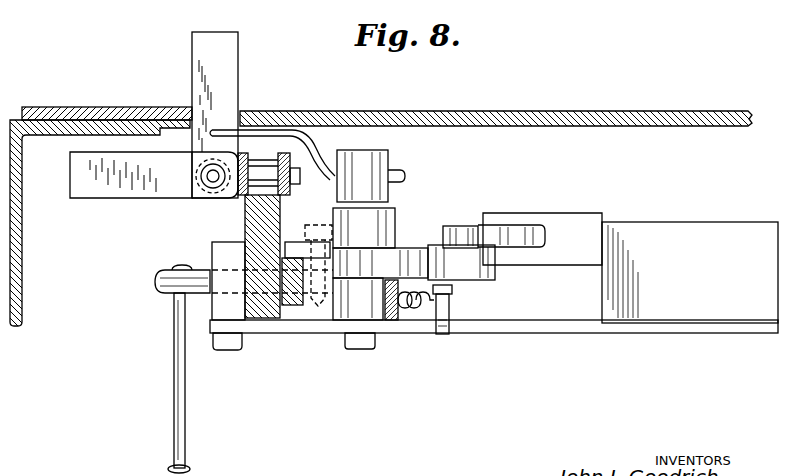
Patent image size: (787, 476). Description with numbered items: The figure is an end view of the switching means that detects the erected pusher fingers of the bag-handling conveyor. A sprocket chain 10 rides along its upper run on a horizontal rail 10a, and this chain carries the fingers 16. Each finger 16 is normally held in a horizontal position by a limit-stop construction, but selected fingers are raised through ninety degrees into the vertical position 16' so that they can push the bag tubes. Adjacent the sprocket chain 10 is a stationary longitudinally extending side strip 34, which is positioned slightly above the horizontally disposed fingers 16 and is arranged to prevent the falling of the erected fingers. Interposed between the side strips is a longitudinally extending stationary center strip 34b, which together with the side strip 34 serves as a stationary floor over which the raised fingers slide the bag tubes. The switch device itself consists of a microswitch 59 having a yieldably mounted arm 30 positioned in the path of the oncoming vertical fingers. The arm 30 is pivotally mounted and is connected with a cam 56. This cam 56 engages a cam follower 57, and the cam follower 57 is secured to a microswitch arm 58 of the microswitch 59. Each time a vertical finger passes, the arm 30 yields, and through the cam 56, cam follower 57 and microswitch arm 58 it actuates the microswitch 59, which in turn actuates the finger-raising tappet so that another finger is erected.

The side strip 34 is at (93, 112).
The center strip 34b is at (542, 110).
The vertical position of finger 16' is at (236, 115).
The finger 16 is at (154, 190).
The microswitch arm 30 is at (320, 137).
The sprocket chain 10 is at (290, 183).
The horizontal rail 10a is at (255, 208).
The cam 56 is at (418, 240).
The cam follower 57 is at (482, 283).
The microswitch arm 58 is at (463, 225).
The microswitch 59 is at (530, 212).